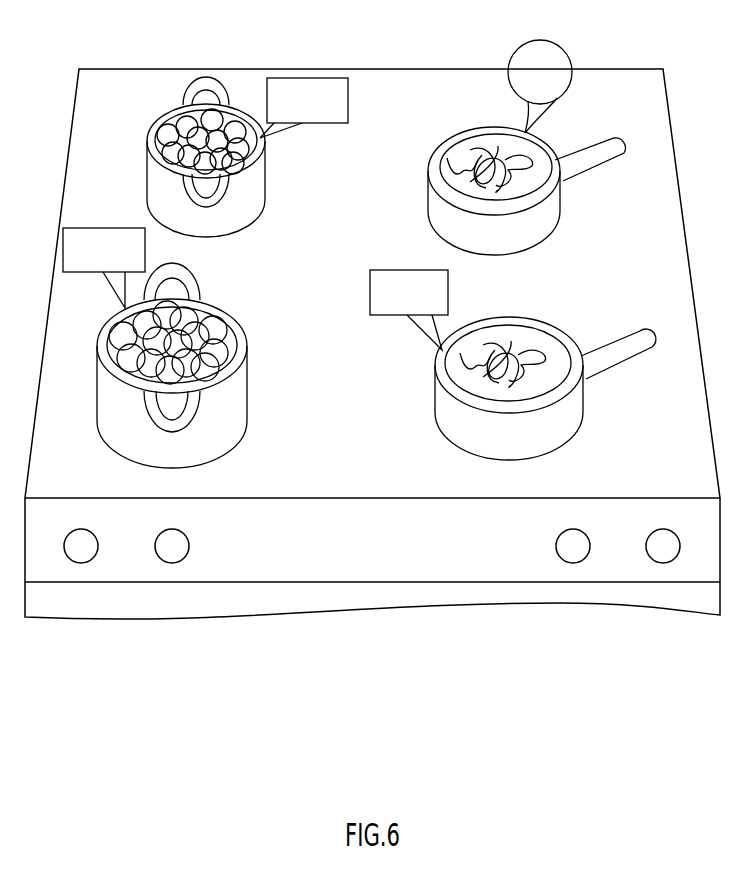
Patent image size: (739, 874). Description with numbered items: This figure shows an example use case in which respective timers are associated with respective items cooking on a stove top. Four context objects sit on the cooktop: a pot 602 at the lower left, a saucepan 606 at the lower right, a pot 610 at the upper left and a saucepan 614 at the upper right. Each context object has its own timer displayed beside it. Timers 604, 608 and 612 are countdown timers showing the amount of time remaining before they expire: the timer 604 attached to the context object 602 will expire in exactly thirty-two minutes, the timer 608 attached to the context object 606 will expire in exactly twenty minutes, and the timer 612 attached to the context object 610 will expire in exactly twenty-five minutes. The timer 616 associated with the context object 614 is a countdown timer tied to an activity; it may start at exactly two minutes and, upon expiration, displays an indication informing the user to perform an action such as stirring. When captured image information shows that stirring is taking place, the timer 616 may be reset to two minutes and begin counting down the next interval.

The context object 602 is at (97, 417).
The timer 604 is at (94, 228).
The context object 606 is at (435, 395).
The timer 608 is at (370, 297).
The context object 610 is at (265, 175).
The timer 612 is at (348, 97).
The context object 614 is at (560, 200).
The timer 616 is at (553, 42).